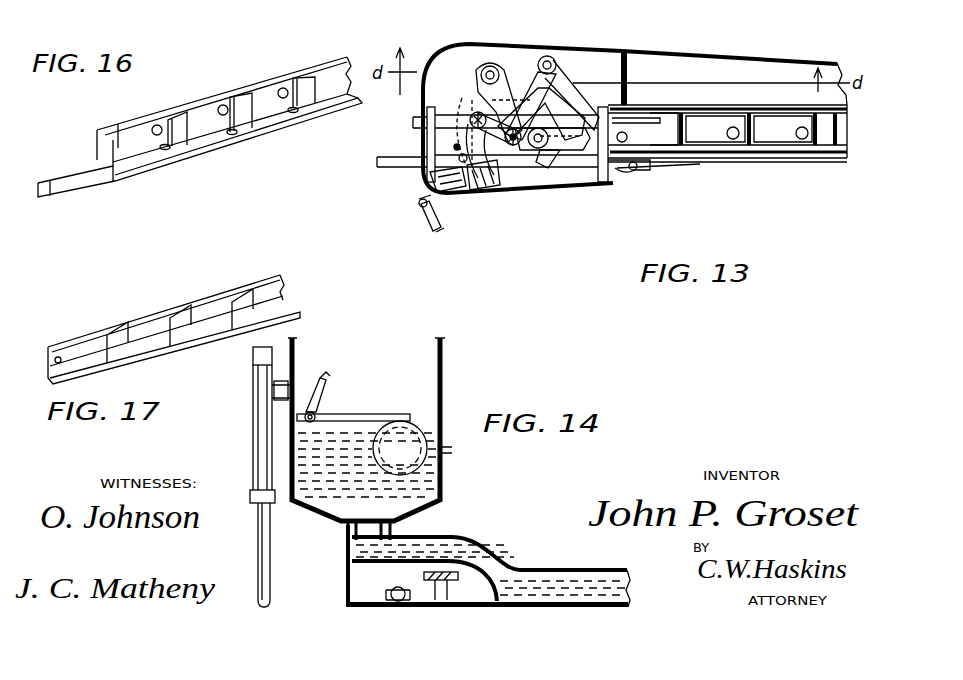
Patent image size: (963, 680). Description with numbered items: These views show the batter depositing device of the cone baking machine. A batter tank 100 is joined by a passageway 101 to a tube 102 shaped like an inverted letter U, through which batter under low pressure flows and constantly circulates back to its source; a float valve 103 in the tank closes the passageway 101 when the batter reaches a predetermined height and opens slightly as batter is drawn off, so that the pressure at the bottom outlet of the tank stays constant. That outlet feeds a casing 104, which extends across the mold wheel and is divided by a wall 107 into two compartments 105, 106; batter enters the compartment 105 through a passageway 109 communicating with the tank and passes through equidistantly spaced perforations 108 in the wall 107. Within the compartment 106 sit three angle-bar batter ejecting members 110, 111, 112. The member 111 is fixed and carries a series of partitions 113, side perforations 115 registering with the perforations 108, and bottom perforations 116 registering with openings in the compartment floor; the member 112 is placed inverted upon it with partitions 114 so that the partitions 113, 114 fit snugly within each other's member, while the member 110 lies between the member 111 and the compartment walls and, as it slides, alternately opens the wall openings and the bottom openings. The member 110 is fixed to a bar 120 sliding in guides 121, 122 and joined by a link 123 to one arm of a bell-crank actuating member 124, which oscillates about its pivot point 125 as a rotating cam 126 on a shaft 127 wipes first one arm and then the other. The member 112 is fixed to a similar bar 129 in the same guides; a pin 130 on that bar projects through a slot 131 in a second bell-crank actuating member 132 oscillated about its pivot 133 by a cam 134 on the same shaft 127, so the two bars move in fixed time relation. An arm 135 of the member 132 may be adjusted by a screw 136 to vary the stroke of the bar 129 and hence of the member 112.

In FIG. 14, the batter tank 100 is at (425, 375).
In FIG. 14, the passageway 101 is at (296, 387).
In FIG. 14, the tube 102 is at (262, 448).
In FIG. 14, the float valve 103 is at (324, 382).
In FIG. 13, the casing 104 is at (512, 46).
In FIG. 14, the casing 104 is at (530, 560).
In FIG. 13, the compartment 105 is at (724, 67).
In FIG. 14, the compartment 105 is at (587, 582).
In FIG. 13, the compartment 106 is at (850, 155).
In FIG. 13, the wall 107 is at (674, 113).
In FIG. 13, the perforations 108 is at (803, 105).
In FIG. 14, the passageway 109 is at (420, 550).
In FIG. 13, the batter ejecting member 110 is at (670, 105).
In FIG. 16, the batter ejecting member 111 is at (145, 153).
In FIG. 13, the batter ejecting member 111 is at (787, 132).
In FIG. 17, the batter ejecting member 112 is at (158, 345).
In FIG. 13, the batter ejecting member 112 is at (730, 158).
In FIG. 16, the partitions 113 is at (293, 78).
In FIG. 13, the partitions 113 is at (716, 134).
In FIG. 17, the partitions 114 is at (183, 315).
In FIG. 13, the partitions 114 is at (797, 150).
In FIG. 16, the perforations 115 is at (157, 124).
In FIG. 16, the perforations 116 is at (293, 113).
In FIG. 13, the bar 120 is at (424, 118).
In FIG. 13, the guide 121 is at (626, 113).
In FIG. 13, the guide 122 is at (428, 183).
In FIG. 13, the link 123 is at (497, 188).
In FIG. 13, the actuating member 124 is at (603, 48).
In FIG. 14, the actuating member 124 is at (462, 565).
In FIG. 13, the pivot point 125 is at (553, 58).
In FIG. 13, the cam 126 is at (558, 110).
In FIG. 13, the shaft 127 is at (545, 182).
In FIG. 13, the bar 129 is at (376, 168).
In FIG. 13, the pin 130 is at (459, 160).
In FIG. 13, the slot 131 is at (453, 147).
In FIG. 13, the actuating member 132 is at (468, 92).
In FIG. 14, the actuating member 132 is at (390, 595).
In FIG. 13, the pivot 133 is at (493, 70).
In FIG. 13, the cam 134 is at (570, 150).
In FIG. 13, the arm 135 is at (493, 183).
In FIG. 13, the screw 136 is at (428, 210).